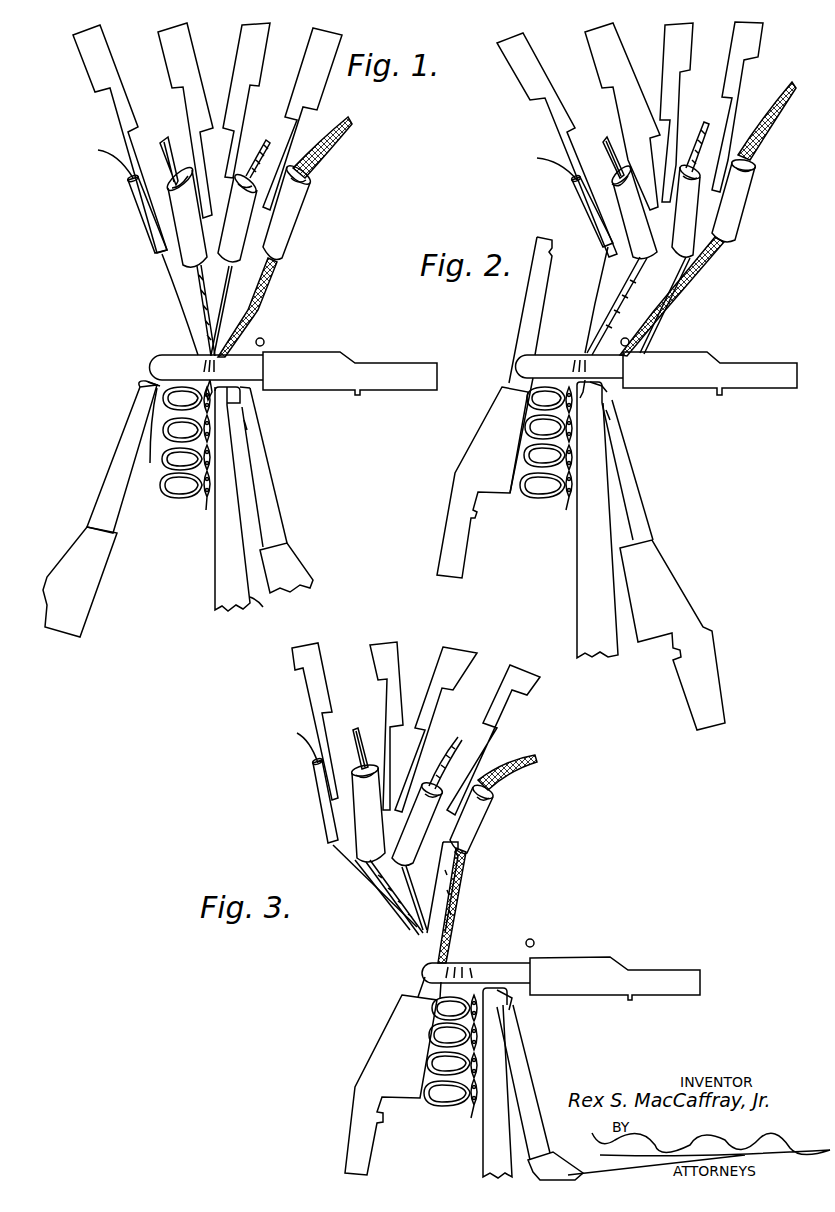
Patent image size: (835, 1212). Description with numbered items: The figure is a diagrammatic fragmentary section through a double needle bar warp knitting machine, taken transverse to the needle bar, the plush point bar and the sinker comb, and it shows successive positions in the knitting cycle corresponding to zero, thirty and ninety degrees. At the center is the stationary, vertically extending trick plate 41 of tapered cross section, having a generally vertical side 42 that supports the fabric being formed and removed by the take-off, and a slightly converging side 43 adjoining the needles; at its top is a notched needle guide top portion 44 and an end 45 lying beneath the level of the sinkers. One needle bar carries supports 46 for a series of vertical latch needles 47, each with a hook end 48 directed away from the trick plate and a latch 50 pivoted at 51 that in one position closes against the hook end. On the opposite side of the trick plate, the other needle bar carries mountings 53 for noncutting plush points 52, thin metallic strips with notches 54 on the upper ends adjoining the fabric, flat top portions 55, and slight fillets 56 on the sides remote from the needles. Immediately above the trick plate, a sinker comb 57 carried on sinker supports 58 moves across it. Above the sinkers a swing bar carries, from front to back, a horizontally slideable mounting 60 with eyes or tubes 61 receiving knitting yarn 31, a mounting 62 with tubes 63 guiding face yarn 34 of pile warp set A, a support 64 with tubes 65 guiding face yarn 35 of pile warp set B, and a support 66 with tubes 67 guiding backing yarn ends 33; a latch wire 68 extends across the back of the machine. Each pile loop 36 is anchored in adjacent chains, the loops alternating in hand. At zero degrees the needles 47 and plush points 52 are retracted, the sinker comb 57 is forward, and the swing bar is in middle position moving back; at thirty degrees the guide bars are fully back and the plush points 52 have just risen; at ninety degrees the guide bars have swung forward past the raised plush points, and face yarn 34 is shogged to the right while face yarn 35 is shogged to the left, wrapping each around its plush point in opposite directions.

In FIG. 1, the knitting yarn 31 is at (112, 162).
In FIG. 2, the knitting yarn 31 is at (537, 158).
In FIG. 3, the knitting yarn 31 is at (297, 747).
In FIG. 1, the backing yarn ends 33 is at (340, 138).
In FIG. 2, the backing yarn ends 33 is at (767, 123).
In FIG. 3, the backing yarn ends 33 is at (513, 767).
In FIG. 1, the face yarn 34 is at (168, 138).
In FIG. 2, the face yarn 34 is at (605, 135).
In FIG. 3, the face yarn 34 is at (363, 715).
In FIG. 1, the face yarn 35 is at (262, 140).
In FIG. 2, the face yarn 35 is at (695, 123).
In FIG. 3, the face yarn 35 is at (453, 737).
In FIG. 2, the pile loop 36 is at (617, 183).
In FIG. 1, the trick plate 41 is at (222, 543).
In FIG. 2, the trick plate 41 is at (583, 567).
In FIG. 3, the trick plate 41 is at (485, 1158).
In FIG. 1, the side 42 is at (213, 517).
In FIG. 2, the side 42 is at (613, 327).
In FIG. 1, the side 43 is at (265, 614).
In FIG. 1, the needle guide top portion 44 is at (243, 385).
In FIG. 1, the end 45 is at (148, 382).
In FIG. 1, the supports 46 is at (293, 558).
In FIG. 2, the supports 46 is at (667, 587).
In FIG. 3, the supports 46 is at (553, 1167).
In FIG. 1, the latch needles 47 is at (260, 493).
In FIG. 2, the latch needles 47 is at (625, 517).
In FIG. 3, the latch needles 47 is at (523, 1087).
In FIG. 1, the hook ends 48 is at (248, 400).
In FIG. 2, the hook ends 48 is at (602, 388).
In FIG. 3, the hook ends 48 is at (512, 998).
In FIG. 1, the latches 50 is at (250, 418).
In FIG. 2, the latches 50 is at (613, 415).
In FIG. 1, the pivot 51 is at (247, 427).
In FIG. 2, the pivot 51 is at (605, 425).
In FIG. 1, the plush points 52 is at (113, 480).
In FIG. 2, the plush points 52 is at (532, 297).
In FIG. 3, the plush points 52 is at (447, 877).
In FIG. 1, the mountings 53 is at (85, 548).
In FIG. 2, the mountings 53 is at (482, 439).
In FIG. 3, the mountings 53 is at (383, 1033).
In FIG. 1, the notches 54 is at (176, 448).
In FIG. 1, the flat top portions 55 is at (143, 388).
In FIG. 1, the fillets 56 is at (142, 397).
In FIG. 1, the sinker comb 57 is at (207, 368).
In FIG. 2, the sinker comb 57 is at (569, 367).
In FIG. 3, the sinker comb 57 is at (476, 973).
In FIG. 1, the sinker supports 58 is at (350, 373).
In FIG. 2, the sinker supports 58 is at (710, 373).
In FIG. 3, the sinker supports 58 is at (615, 978).
In FIG. 1, the horizontally slideable mounting 60 is at (102, 47).
In FIG. 2, the horizontally slideable mounting 60 is at (527, 48).
In FIG. 1, the eyes or tubes 61 is at (142, 220).
In FIG. 2, the eyes or tubes 61 is at (592, 210).
In FIG. 3, the eyes or tubes 61 is at (322, 797).
In FIG. 1, the horizontally slideable mounting 62 is at (187, 43).
In FIG. 2, the horizontally slideable mounting 62 is at (622, 38).
In FIG. 1, the eyes or tubes 63 is at (188, 250).
In FIG. 2, the eyes or tubes 63 is at (633, 211).
In FIG. 3, the eyes or tubes 63 is at (363, 817).
In FIG. 1, the horizontally slideable support 64 is at (263, 43).
In FIG. 2, the horizontally slideable support 64 is at (692, 35).
In FIG. 1, the eyes or tubes 65 is at (242, 232).
In FIG. 2, the eyes or tubes 65 is at (690, 217).
In FIG. 3, the eyes or tubes 65 is at (417, 827).
In FIG. 1, the horizontally slideable support 66 is at (342, 48).
In FIG. 2, the horizontally slideable support 66 is at (765, 42).
In FIG. 1, the eyes or tubes 67 is at (297, 222).
In FIG. 2, the eyes or tubes 67 is at (748, 185).
In FIG. 3, the eyes or tubes 67 is at (477, 820).
In FIG. 1, the latch wire 68 is at (264, 339).
In FIG. 2, the latch wire 68 is at (629, 339).
In FIG. 3, the latch wire 68 is at (543, 930).